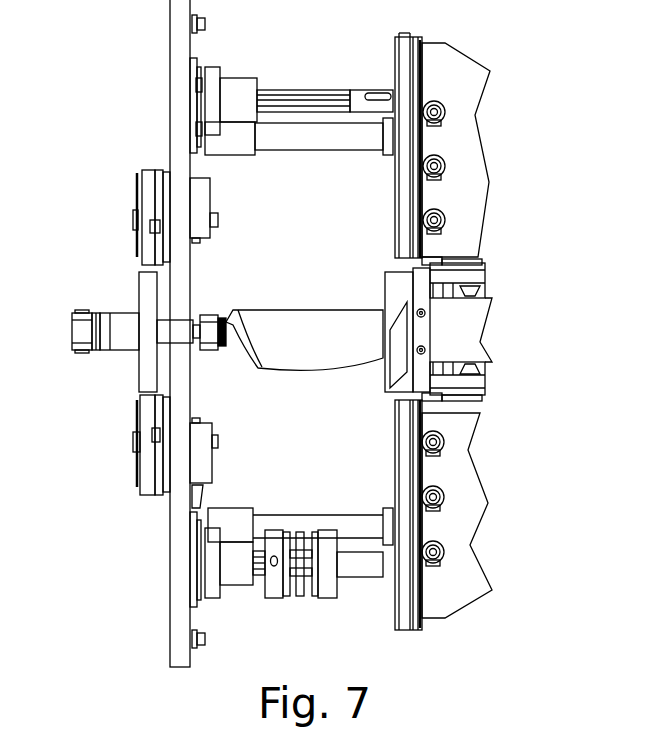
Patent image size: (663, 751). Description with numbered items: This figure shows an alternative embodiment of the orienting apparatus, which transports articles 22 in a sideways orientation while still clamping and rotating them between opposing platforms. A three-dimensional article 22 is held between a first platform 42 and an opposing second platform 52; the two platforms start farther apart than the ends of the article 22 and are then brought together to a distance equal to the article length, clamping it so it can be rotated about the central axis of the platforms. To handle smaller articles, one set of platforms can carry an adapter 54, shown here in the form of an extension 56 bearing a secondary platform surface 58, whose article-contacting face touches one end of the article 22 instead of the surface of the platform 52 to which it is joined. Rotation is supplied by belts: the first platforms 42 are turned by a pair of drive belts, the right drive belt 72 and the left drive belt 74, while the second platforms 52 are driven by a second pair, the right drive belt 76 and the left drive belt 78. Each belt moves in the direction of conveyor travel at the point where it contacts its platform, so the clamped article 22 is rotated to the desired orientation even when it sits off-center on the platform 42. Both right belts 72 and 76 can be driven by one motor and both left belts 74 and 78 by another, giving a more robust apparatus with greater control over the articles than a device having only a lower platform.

The article 22 is at (352, 343).
The first platform 42 is at (397, 297).
The second platform 52 is at (147, 310).
The adapter 54 is at (182, 296).
The extension 56 is at (184, 339).
The secondary platform surface 58 is at (214, 318).
The right drive belt 72 is at (402, 184).
The left drive belt 74 is at (402, 457).
The right drive belt 76 is at (152, 187).
The left drive belt 78 is at (148, 458).